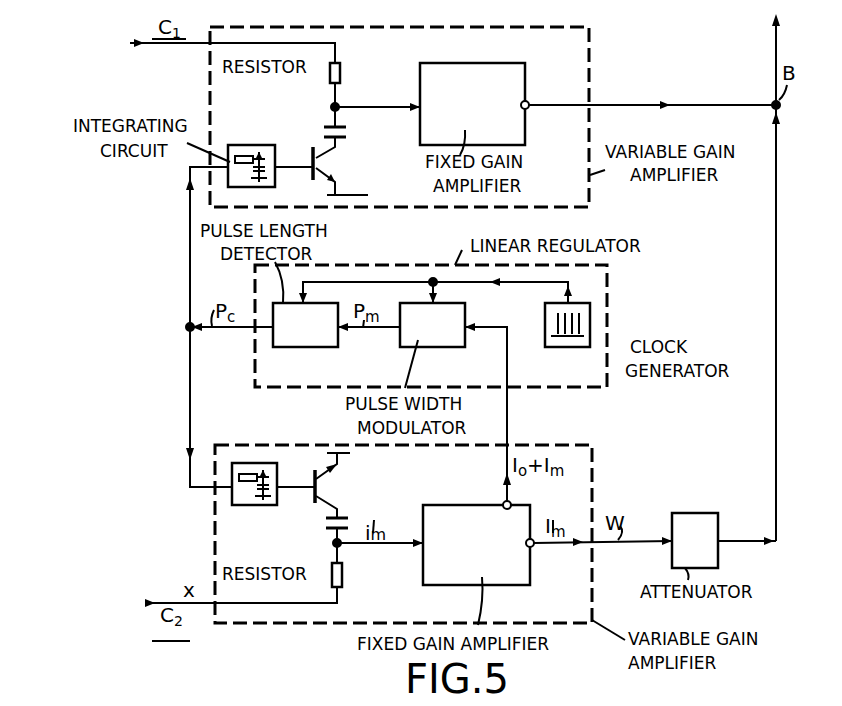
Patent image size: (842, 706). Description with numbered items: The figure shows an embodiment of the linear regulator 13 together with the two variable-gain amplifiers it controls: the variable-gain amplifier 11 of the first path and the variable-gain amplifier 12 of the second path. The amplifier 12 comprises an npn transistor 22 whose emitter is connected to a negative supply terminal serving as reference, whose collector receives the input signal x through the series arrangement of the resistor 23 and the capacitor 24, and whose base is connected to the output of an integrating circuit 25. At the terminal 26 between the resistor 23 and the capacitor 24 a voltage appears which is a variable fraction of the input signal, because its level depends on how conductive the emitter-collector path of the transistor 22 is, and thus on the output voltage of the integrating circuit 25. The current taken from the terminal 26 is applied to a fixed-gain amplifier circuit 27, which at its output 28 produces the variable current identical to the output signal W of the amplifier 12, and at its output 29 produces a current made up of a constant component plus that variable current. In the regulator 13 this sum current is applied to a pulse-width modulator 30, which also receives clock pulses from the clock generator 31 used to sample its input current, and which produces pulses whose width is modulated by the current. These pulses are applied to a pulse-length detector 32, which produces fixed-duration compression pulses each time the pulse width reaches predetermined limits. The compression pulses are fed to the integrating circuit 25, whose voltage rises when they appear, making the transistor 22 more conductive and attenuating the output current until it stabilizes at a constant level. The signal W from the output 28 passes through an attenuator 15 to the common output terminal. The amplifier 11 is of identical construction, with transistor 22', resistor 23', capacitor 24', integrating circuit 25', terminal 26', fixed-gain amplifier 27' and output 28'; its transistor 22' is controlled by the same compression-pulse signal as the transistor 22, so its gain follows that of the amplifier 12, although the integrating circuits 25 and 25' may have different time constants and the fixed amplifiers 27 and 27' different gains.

The variable-gain amplifier 11 is at (590, 60).
The variable-gain amplifier 12 is at (593, 565).
The linear regulator 13 is at (607, 313).
The attenuator 15 is at (678, 513).
The npn transistor 22 is at (346, 485).
The transistor 22' is at (349, 166).
The resistor 23 is at (358, 584).
The resistor 23' is at (357, 70).
The capacitor 24 is at (351, 509).
The capacitor 24' is at (354, 133).
The integrating circuit 25 is at (254, 507).
The integrating circuit 25' is at (251, 152).
The terminal 26 is at (314, 543).
The terminal 26' is at (311, 106).
The fixed-gain amplifier circuit 27 is at (476, 523).
The fixed-gain amplifier 27' is at (472, 92).
The output 28 is at (548, 562).
The output 28' is at (546, 84).
The output 29 is at (511, 503).
The pulse-width modulator 30 is at (455, 303).
The clock generator 31 is at (575, 347).
The pulse-length detector 32 is at (310, 347).